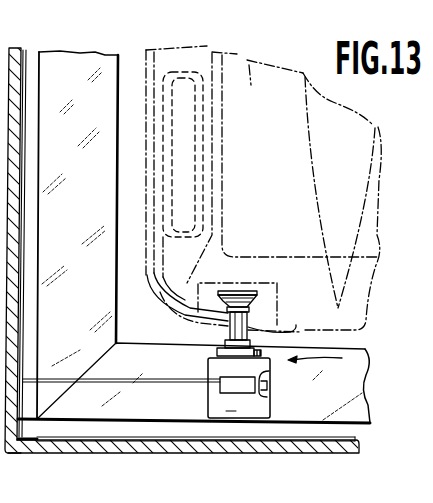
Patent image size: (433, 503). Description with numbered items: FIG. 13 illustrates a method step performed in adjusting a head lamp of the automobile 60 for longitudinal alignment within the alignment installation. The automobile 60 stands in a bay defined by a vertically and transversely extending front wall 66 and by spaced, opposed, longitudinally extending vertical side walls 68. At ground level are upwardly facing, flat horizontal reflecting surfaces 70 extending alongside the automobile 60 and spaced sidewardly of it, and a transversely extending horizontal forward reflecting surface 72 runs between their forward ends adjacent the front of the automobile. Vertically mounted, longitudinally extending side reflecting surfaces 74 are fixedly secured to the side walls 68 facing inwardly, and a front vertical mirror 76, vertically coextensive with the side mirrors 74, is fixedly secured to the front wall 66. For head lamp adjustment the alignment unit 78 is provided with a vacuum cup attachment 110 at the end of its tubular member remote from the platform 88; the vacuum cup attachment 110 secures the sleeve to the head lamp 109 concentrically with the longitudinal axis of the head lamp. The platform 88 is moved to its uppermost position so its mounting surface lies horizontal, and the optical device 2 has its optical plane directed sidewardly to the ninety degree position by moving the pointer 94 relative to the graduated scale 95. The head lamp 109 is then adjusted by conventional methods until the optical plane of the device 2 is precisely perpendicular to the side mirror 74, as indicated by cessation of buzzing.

The optical device 2 is at (236, 342).
The automobile 60 is at (248, 62).
The front wall 66 is at (359, 458).
The side walls 68 is at (15, 47).
The horizontal reflecting surfaces 70 is at (105, 72).
The forward reflecting surface 72 is at (358, 395).
The side reflecting surfaces 74 is at (25, 233).
The front vertical mirror 76 is at (355, 440).
The alignment unit 78 is at (325, 363).
The platform 88 is at (208, 362).
The pointer 94 is at (270, 374).
The graduated scale of degrees 95 is at (268, 396).
The head lamp 109 is at (240, 297).
The vacuum cup attachment 110 is at (279, 302).